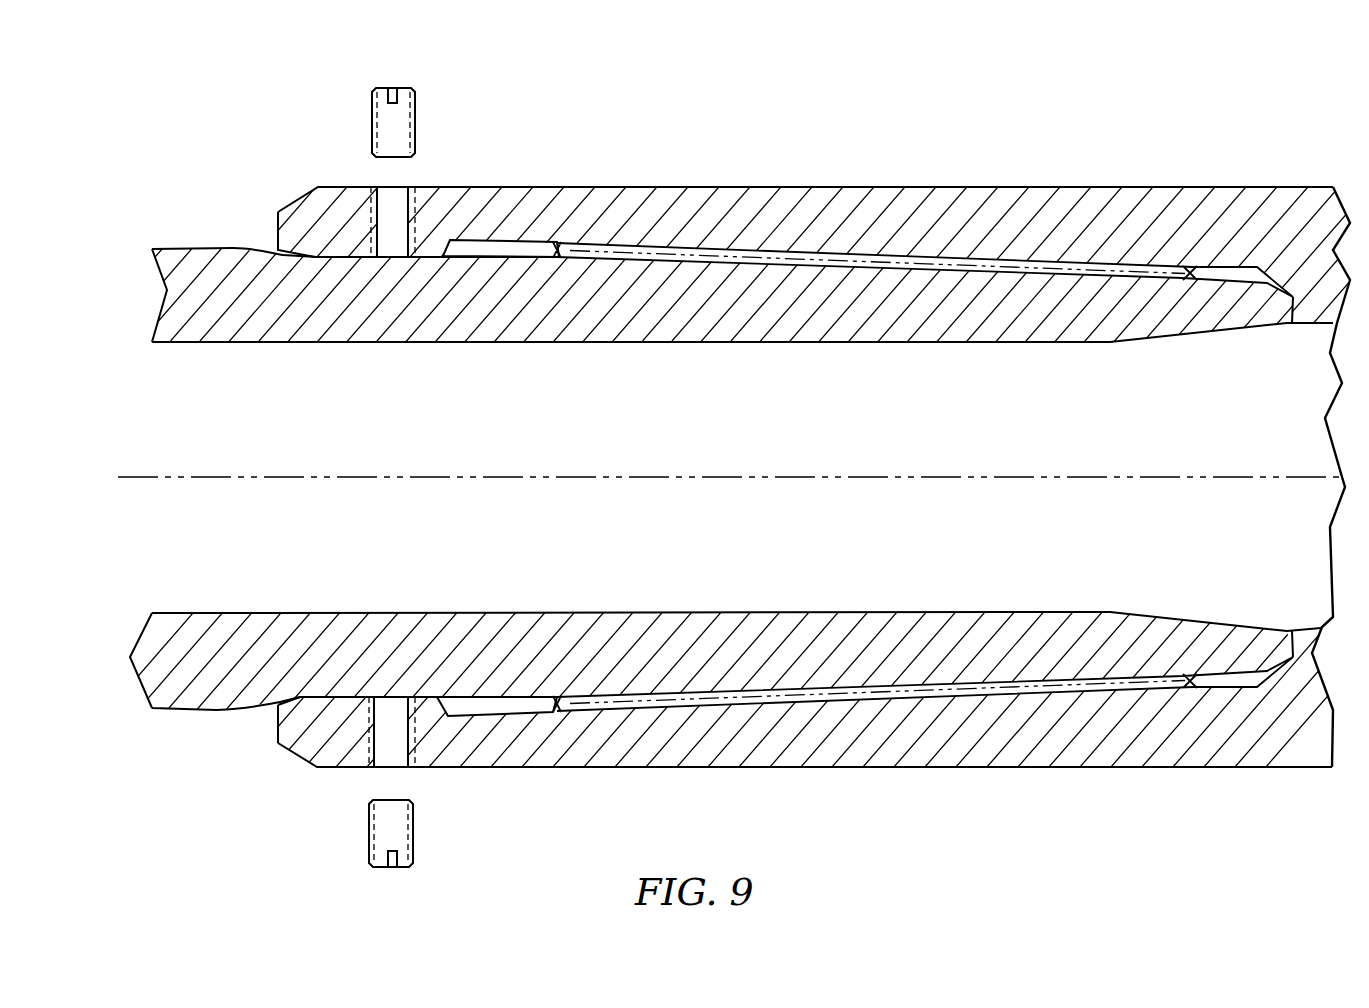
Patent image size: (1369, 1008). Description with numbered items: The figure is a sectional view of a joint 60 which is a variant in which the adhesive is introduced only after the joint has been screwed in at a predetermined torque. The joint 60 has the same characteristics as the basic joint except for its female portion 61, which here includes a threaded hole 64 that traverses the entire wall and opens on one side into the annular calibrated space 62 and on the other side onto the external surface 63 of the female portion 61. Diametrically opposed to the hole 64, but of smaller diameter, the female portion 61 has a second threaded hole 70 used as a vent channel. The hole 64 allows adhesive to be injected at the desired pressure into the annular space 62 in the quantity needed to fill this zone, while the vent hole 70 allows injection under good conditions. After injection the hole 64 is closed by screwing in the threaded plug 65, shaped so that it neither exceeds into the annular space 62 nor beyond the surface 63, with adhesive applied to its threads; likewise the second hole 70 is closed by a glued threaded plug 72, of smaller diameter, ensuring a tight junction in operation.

The joint 60 is at (836, 140).
The female portion 61 is at (432, 193).
The annular calibrated space 62 is at (443, 256).
The external surface 63 is at (497, 188).
The threaded hole 64 is at (370, 218).
The threaded plug 65 is at (413, 109).
The second threaded hole 70 is at (380, 768).
The plug 72 is at (413, 845).